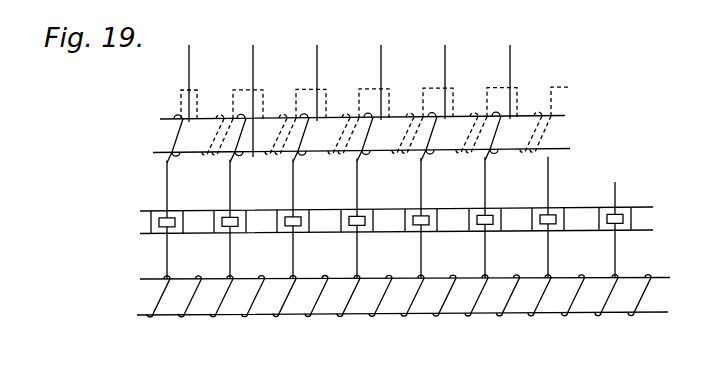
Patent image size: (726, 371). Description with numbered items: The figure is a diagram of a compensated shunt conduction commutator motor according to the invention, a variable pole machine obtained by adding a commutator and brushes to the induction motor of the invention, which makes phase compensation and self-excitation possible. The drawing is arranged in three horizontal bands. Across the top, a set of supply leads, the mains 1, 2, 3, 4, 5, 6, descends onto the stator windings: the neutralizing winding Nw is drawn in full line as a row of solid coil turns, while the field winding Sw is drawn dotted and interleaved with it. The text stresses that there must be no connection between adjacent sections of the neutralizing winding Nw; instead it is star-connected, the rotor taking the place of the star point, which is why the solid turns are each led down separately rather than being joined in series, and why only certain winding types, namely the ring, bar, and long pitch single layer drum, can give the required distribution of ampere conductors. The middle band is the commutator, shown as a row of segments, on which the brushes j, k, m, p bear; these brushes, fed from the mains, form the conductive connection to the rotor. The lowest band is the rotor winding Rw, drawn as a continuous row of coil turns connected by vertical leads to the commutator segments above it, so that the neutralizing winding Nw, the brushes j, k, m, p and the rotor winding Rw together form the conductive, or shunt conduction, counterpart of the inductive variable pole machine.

The main 1 is at (189, 75).
The main 2 is at (253, 92).
The main 3 is at (317, 74).
The main 4 is at (381, 74).
The terminal lead 5 is at (445, 73).
The terminal lead 6 is at (510, 73).
The neutralizing winding Nw is at (317, 127).
The field winding Sw is at (412, 100).
The brush j is at (169, 210).
The brush k is at (233, 218).
The brush m is at (297, 217).
The brush p is at (363, 217).
The rotor winding Rw is at (447, 303).